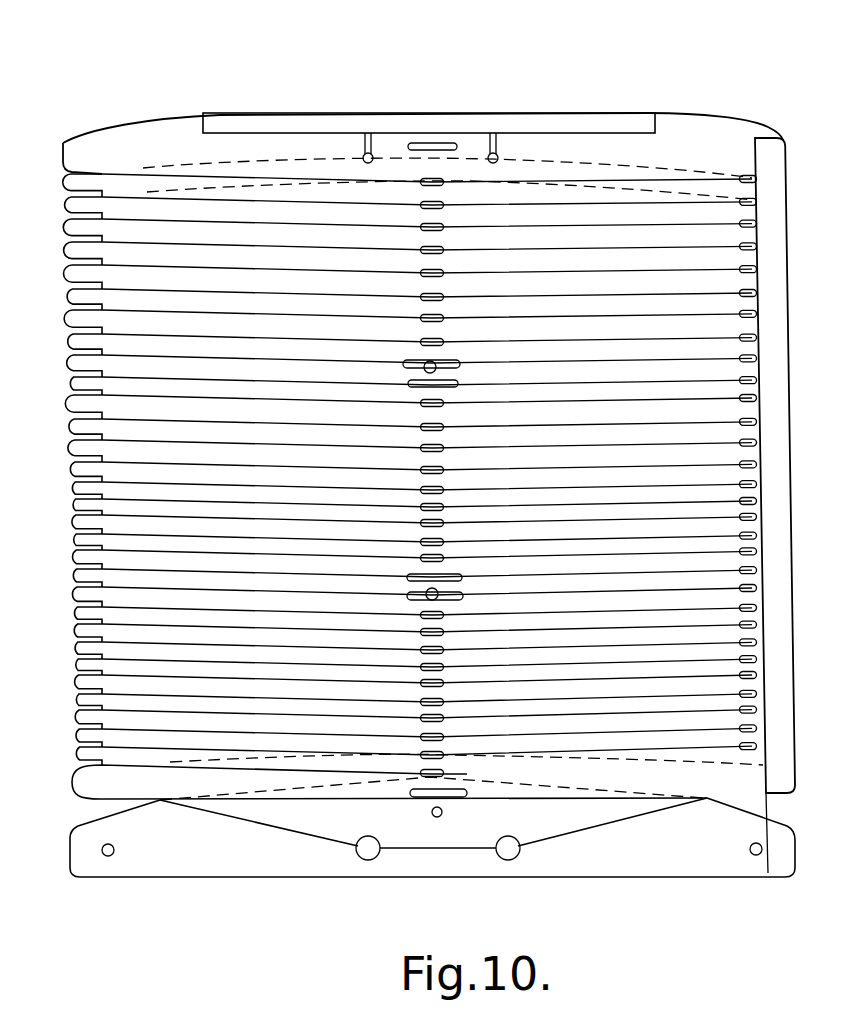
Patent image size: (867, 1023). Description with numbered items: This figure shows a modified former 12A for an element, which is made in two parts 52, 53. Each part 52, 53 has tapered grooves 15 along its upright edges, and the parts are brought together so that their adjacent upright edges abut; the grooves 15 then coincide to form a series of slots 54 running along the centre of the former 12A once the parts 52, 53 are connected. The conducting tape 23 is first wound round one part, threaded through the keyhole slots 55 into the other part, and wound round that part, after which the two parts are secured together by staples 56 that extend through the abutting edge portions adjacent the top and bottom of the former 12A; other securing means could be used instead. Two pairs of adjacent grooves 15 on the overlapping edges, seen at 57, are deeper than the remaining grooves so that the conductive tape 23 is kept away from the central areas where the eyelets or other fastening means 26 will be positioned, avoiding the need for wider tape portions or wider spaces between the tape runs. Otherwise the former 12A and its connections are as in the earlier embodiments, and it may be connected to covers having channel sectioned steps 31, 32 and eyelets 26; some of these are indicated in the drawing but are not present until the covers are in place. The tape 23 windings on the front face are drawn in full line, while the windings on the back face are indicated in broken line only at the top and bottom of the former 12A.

The modified former 12A is at (158, 80).
The tapered grooves 15 is at (62, 352).
The conducting tape 23 is at (272, 222).
The eyelets or other fastening means 26 is at (424, 371).
The channel sectioned step 31 is at (794, 585).
The channel sectioned step 32 is at (612, 112).
The former part 52 is at (170, 213).
The former part 53 is at (712, 215).
The slots 54 is at (428, 203).
The keyhole slots 55 is at (365, 150).
The staples 56 is at (449, 143).
The deeper grooves 57 is at (457, 363).